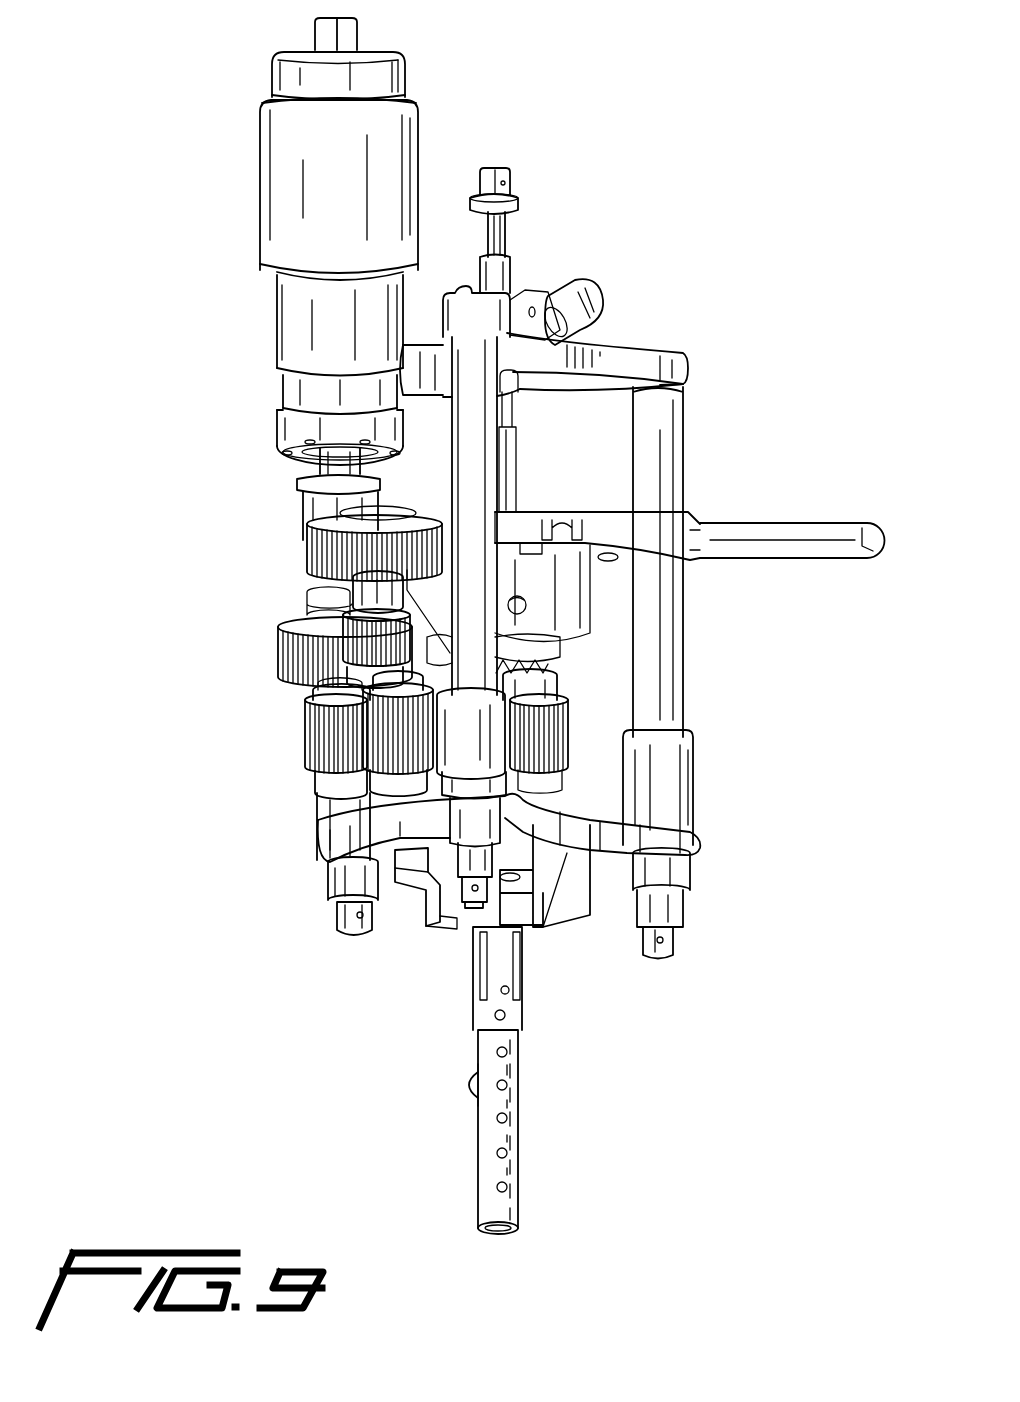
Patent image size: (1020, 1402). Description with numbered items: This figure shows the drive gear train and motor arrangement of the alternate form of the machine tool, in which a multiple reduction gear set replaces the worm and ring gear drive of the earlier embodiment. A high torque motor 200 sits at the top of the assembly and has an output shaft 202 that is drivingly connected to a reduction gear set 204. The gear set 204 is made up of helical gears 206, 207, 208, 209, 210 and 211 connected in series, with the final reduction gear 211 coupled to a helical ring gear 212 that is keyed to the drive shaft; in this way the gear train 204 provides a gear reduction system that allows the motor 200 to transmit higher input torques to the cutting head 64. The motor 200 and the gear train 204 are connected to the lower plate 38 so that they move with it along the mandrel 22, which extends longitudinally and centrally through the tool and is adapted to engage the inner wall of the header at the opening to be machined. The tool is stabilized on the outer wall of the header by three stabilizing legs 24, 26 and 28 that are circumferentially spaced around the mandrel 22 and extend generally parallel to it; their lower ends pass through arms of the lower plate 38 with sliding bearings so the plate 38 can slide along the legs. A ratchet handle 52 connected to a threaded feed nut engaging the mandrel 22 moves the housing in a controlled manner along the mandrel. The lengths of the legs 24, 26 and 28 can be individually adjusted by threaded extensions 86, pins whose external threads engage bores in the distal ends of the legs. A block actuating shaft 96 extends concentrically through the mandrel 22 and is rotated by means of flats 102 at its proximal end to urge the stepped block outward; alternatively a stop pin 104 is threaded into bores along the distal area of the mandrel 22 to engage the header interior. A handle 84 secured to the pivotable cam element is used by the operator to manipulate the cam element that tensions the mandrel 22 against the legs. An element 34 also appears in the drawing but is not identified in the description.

The motor 200 is at (252, 235).
The output shaft 202 is at (328, 472).
The reduction gear set 204 is at (164, 680).
The helical gear 206 is at (306, 567).
The helical gear 207 is at (325, 587).
The helical gear 208 is at (306, 690).
The helical gear 209 is at (282, 670).
The helical gear 210 is at (305, 753).
The final reduction gear 211 is at (330, 813).
The helical ring gear 212 is at (560, 742).
The mandrel 22 is at (484, 272).
The stabilizing leg 24 is at (453, 488).
The stabilizing leg 26 is at (682, 447).
The stabilizing leg 28 is at (338, 883).
The upper plate 34 is at (624, 357).
The lower plate 38 is at (650, 840).
The ratchet handle 52 is at (771, 523).
The cutting head 64 is at (553, 858).
The handle 84 is at (590, 290).
The threaded extension 86 is at (674, 944).
The block actuating shaft 96 is at (503, 240).
The flats 102 is at (510, 185).
The stop pin 104 is at (470, 1082).